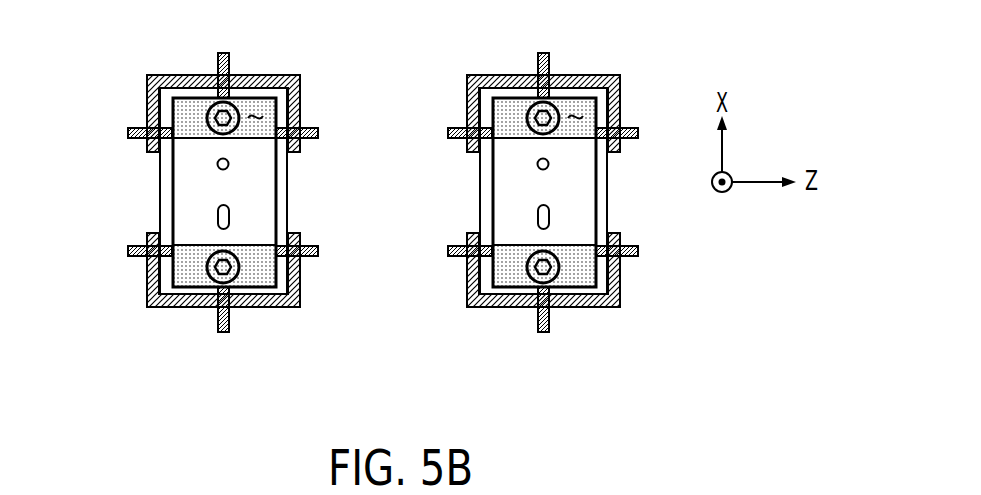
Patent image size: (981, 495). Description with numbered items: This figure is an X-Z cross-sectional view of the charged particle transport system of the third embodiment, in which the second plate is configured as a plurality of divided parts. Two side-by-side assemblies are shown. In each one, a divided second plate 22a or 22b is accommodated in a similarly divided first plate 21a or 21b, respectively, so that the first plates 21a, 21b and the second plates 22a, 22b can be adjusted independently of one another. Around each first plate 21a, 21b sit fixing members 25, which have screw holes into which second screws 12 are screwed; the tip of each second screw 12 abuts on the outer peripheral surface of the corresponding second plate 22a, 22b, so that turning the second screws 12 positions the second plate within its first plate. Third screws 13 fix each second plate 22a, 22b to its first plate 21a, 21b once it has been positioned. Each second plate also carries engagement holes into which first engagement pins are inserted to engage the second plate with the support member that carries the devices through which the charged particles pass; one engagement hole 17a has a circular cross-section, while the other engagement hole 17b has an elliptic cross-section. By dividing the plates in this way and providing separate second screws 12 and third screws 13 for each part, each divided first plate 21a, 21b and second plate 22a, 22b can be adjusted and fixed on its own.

The second screw 12 is at (224, 53).
The third screw 13 is at (213, 266).
The engagement hole having a circular cross-section 17a is at (217, 164).
The engagement hole having an elliptic cross-section 17b is at (217, 217).
The divided first plate 21a is at (290, 190).
The divided first plate 21b is at (610, 190).
The divided second plate 22a is at (263, 114).
The divided second plate 22b is at (583, 114).
The fixing member 25 is at (188, 75).